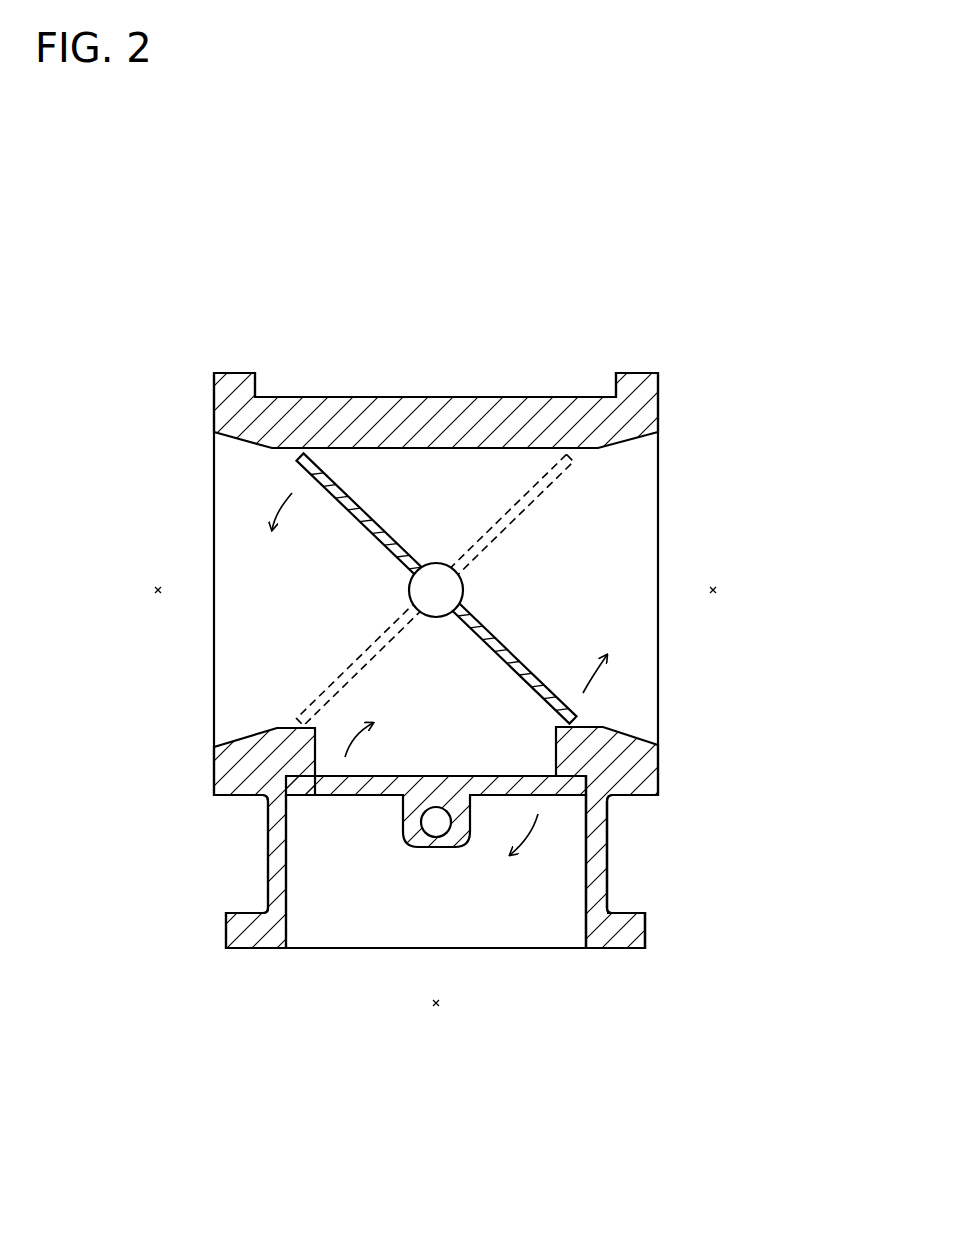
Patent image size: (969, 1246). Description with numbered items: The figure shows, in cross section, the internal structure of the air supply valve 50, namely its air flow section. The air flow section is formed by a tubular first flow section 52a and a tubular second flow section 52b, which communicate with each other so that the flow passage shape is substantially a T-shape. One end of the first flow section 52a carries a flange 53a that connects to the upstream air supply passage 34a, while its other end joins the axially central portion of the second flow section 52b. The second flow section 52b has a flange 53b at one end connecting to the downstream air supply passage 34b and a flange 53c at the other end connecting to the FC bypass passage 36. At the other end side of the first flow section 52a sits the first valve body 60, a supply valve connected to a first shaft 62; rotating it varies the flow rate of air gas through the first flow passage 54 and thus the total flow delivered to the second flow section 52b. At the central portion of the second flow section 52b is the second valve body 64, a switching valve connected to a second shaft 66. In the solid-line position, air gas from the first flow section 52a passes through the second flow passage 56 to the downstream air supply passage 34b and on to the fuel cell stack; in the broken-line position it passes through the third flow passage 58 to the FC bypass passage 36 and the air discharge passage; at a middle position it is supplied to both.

The air supply valve 50 is at (697, 280).
The first flow section 52a is at (597, 832).
The second flow section 52b is at (497, 412).
The flange 53a is at (635, 930).
The flange 53b is at (234, 385).
The flange 53c is at (634, 385).
The first flow passage 54 is at (560, 868).
The second flow passage 56 is at (243, 695).
The third flow passage 58 is at (640, 710).
The first valve body 60 is at (352, 785).
The first shaft 62 is at (436, 822).
The second valve body 64 is at (300, 466).
The second shaft 66 is at (436, 582).
The upstream air supply passage 34a is at (436, 1003).
The downstream air supply passage 34b is at (158, 590).
The FC bypass passage 36 is at (713, 590).